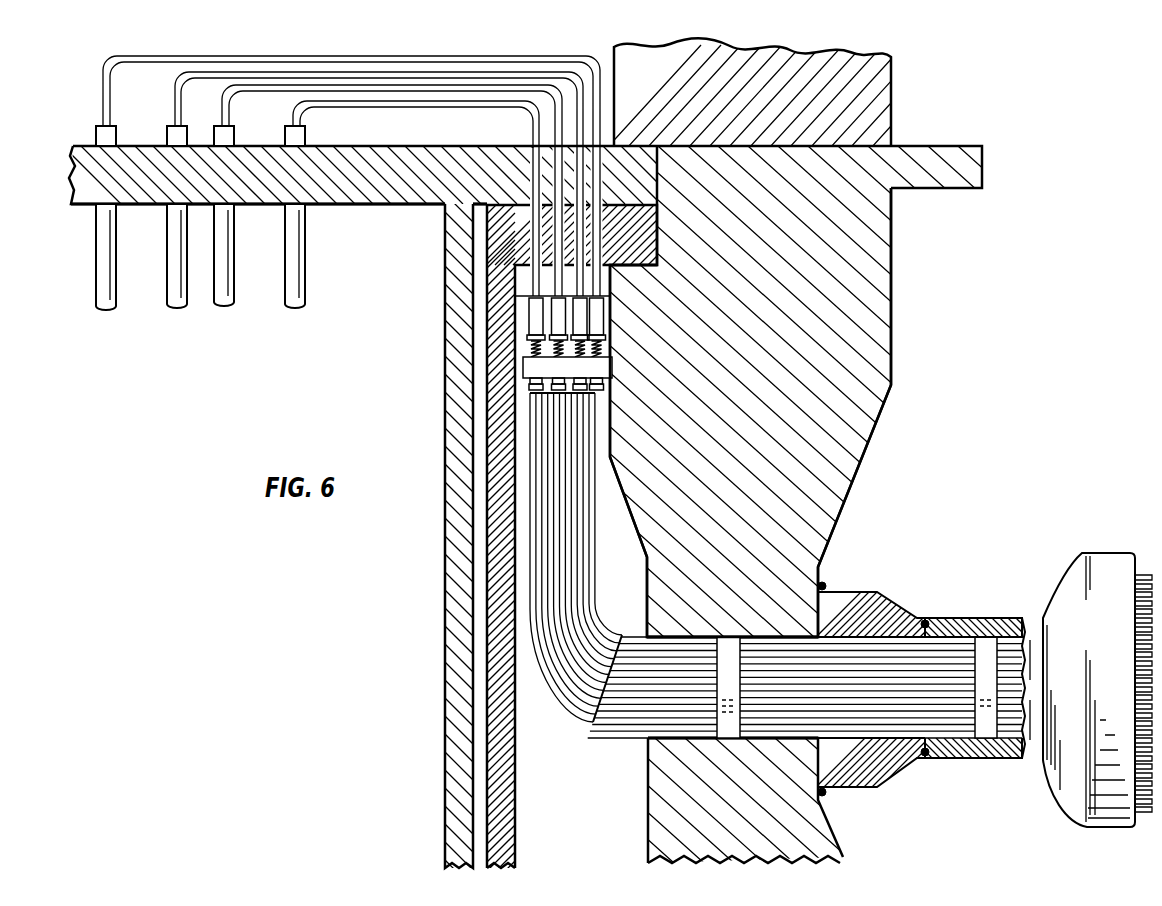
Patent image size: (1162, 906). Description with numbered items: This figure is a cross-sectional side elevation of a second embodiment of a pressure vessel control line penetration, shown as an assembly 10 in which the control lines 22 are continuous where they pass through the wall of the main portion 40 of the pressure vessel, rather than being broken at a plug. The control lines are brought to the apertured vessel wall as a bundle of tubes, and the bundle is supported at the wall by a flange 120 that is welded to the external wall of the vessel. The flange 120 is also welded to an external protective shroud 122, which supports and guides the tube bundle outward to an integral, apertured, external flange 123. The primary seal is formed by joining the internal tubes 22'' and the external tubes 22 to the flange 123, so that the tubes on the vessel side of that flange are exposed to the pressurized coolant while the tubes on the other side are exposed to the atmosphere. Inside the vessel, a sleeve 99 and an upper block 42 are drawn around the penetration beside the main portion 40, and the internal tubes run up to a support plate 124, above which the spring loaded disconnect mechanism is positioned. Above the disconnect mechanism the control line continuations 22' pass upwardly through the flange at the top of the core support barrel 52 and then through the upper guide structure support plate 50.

The control line continuations 22' is at (348, 166).
The upper guide structure support plate 50 is at (427, 147).
The upper housing block 42 is at (887, 93).
The sleeve 99 is at (635, 265).
The main portion of the pressure vessel 40 is at (882, 278).
The probe assembly 10 is at (916, 396).
The support plate 124 is at (530, 365).
The core support barrel 52 is at (508, 790).
The internal tubes 22'' is at (777, 584).
The flange 120 is at (862, 592).
The external protective shroud 122 is at (975, 618).
The external flange 123 is at (1102, 553).
The control lines 22 is at (1141, 662).